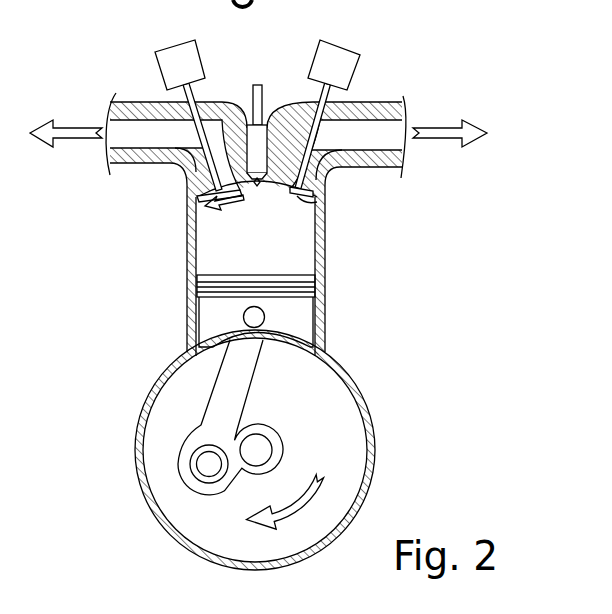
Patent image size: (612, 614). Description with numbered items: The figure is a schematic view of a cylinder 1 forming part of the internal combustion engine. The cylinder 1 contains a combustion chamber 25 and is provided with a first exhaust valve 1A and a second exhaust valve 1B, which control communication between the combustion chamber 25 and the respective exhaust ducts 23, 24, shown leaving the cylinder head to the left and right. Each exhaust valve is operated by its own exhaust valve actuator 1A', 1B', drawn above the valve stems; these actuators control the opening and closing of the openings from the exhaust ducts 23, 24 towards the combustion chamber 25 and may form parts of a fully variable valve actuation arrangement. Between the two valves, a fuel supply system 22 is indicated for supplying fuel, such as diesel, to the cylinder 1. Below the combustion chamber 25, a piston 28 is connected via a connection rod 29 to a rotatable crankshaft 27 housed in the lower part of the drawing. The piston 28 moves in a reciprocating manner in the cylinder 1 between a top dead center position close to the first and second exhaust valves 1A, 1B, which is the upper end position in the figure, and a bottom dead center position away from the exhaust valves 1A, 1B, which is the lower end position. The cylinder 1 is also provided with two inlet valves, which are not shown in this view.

The cylinder 1 is at (463, 44).
The first exhaust valve 1A is at (188, 212).
The exhaust valve actuator 1A' is at (185, 104).
The second exhaust valve 1B is at (341, 199).
The exhaust valve actuator 1B' is at (339, 101).
The fuel supply system 22 is at (263, 113).
The exhaust duct 23 is at (147, 133).
The exhaust duct 24 is at (367, 132).
The combustion chamber 25 is at (263, 238).
The crankshaft 27 is at (258, 449).
The piston 28 is at (282, 314).
The connection rod 29 is at (232, 398).